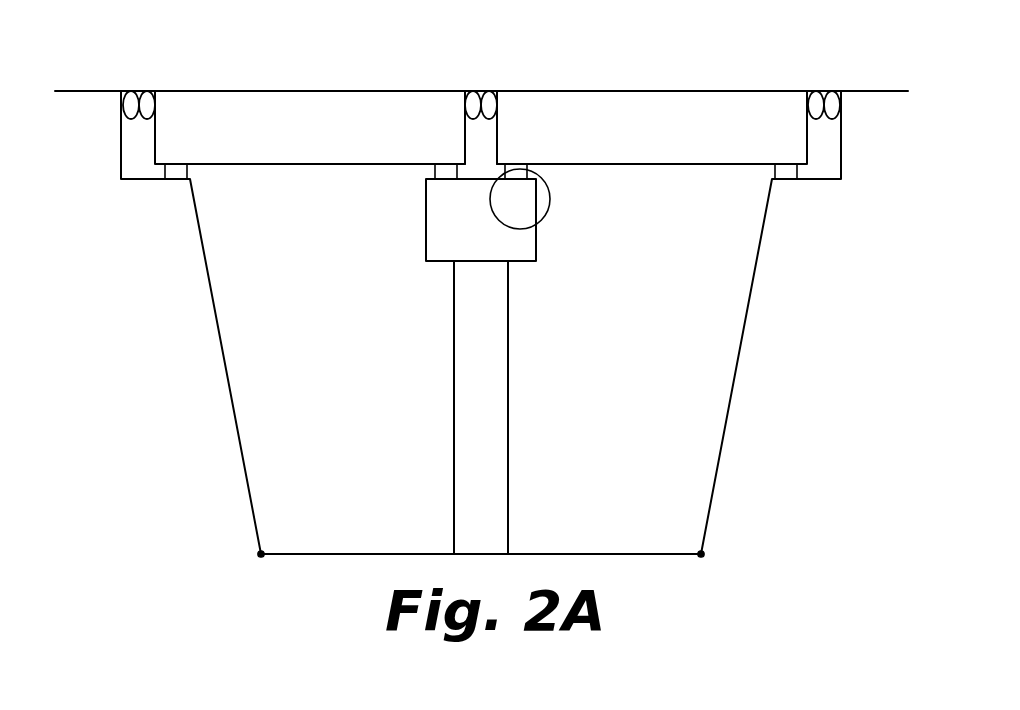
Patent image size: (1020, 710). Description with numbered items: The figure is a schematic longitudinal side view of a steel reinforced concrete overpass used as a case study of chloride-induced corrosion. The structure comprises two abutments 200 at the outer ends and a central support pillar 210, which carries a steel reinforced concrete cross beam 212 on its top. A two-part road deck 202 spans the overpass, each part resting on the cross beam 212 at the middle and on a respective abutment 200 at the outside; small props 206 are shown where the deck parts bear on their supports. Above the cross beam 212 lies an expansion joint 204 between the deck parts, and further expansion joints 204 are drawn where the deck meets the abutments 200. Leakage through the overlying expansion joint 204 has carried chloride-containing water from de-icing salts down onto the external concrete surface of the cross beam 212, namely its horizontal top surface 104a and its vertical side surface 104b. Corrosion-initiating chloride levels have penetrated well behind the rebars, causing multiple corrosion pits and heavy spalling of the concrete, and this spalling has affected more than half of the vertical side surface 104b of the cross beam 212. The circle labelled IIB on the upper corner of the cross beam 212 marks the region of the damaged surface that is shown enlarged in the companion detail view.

The abutment 200 is at (138, 239).
The road deck 202 is at (325, 138).
The expansion joint 204 is at (133, 88).
The prop 206 is at (178, 172).
The horizontal top surface of structure 104a is at (484, 178).
The vertical side surface of structure 104b is at (426, 213).
The cross beam 212 is at (440, 246).
The support pillar 210 is at (491, 394).
The detail view IIB is at (542, 221).